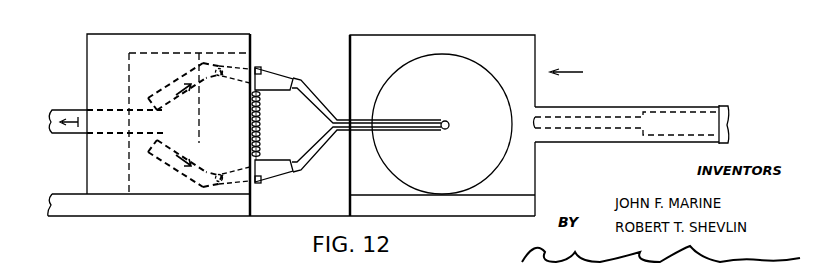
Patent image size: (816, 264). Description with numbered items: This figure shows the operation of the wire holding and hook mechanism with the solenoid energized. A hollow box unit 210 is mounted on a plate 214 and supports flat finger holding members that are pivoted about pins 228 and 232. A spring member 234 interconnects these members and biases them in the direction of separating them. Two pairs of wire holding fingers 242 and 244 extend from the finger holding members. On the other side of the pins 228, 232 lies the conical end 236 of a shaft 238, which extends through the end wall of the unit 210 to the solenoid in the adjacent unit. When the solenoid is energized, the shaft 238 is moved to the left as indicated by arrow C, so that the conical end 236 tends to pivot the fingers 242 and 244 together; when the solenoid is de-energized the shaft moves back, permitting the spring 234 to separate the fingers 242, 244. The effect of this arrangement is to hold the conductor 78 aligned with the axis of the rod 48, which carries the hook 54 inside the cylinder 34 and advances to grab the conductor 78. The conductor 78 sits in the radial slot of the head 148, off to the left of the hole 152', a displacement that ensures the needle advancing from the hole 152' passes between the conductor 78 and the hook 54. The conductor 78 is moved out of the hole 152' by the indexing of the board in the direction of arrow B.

The unit 210 is at (107, 33).
The shaft 238 is at (73, 110).
The arrow C is at (78, 128).
The pin 228 is at (220, 75).
The conical end 236 is at (182, 153).
The pin 232 is at (213, 183).
The spring member 234 is at (261, 126).
The wire holding fingers 242 is at (392, 120).
The wire holding fingers 244 is at (380, 132).
The conductor 78 is at (447, 121).
The hole 152' is at (442, 124).
The head 148 is at (536, 50).
The arrow B is at (575, 73).
The cylinder 34 is at (625, 107).
The rod 48 is at (725, 114).
The hook 54 is at (598, 130).
The plate 214 is at (537, 217).